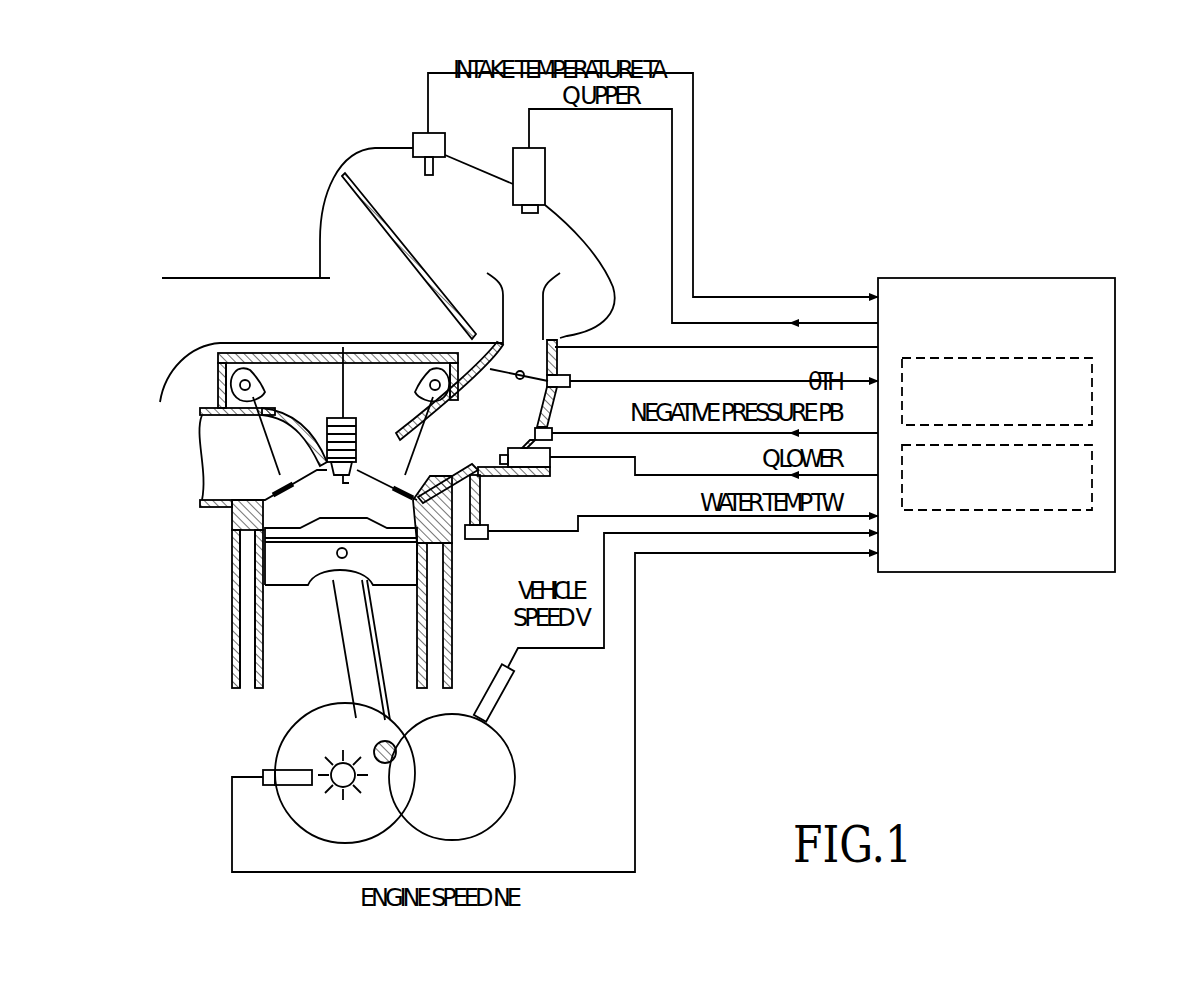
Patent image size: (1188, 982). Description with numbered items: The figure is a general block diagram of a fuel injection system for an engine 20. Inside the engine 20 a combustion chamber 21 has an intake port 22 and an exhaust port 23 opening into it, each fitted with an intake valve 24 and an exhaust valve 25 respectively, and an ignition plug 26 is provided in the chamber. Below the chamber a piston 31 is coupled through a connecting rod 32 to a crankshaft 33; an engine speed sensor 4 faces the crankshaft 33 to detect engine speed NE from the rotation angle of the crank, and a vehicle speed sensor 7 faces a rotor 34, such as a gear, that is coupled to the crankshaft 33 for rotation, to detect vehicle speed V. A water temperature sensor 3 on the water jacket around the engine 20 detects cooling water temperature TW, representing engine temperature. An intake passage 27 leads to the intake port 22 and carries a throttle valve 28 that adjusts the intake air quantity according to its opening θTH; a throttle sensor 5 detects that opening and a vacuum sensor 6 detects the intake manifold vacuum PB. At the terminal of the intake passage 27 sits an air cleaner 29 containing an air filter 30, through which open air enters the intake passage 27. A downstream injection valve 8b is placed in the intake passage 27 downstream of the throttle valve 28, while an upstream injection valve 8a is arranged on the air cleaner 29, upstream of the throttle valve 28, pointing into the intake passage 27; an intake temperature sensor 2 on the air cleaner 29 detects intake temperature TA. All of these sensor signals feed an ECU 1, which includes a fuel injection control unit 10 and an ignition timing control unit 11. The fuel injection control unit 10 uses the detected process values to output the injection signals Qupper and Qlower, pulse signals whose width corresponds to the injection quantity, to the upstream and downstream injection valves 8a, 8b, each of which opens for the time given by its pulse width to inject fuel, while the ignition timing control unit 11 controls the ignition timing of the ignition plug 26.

The ECU (Engine Control Unit) 1 is at (1053, 572).
The intake temperature sensor 2 is at (445, 147).
The water temperature sensor 3 is at (486, 540).
The engine speed sensor 4 is at (263, 771).
The throttle sensor 5 is at (560, 362).
The vacuum sensor 6 is at (552, 430).
The vehicle speed sensor 7 is at (497, 698).
The upstream injection valve 8a is at (545, 173).
The downstream injection valve 8b is at (550, 460).
The fuel injection control unit 10 is at (1092, 386).
The ignition timing control unit 11 is at (1092, 474).
The engine 20 is at (205, 588).
The combustion chamber 21 is at (277, 515).
The intake port 22 is at (423, 478).
The exhaust port 23 is at (248, 497).
The intake valve 24 is at (407, 487).
The exhaust valve 25 is at (283, 483).
The ignition plug 26 is at (345, 420).
The intake passage 27 is at (487, 400).
The throttle valve 28 is at (537, 375).
The air cleaner 29 is at (593, 253).
The air filter 30 is at (400, 249).
The piston 31 is at (278, 583).
The connecting rod 32 is at (351, 632).
The crankshaft 33 is at (340, 780).
The rotor 34 is at (507, 760).